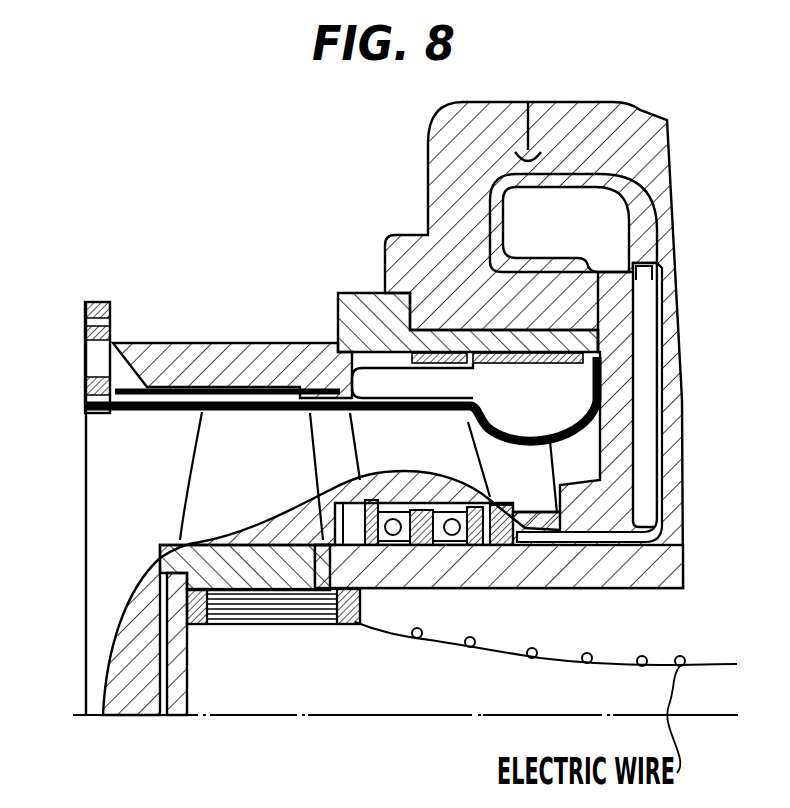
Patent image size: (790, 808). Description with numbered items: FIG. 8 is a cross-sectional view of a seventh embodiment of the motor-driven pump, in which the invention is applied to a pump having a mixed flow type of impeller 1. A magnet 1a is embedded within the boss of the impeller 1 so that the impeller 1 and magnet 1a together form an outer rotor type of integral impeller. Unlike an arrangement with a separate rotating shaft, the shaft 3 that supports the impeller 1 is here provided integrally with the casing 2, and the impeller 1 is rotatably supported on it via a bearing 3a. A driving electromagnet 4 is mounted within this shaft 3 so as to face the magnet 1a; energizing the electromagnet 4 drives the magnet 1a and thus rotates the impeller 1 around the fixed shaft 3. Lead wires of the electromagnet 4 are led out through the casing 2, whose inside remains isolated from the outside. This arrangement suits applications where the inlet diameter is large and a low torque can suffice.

The impeller 1 is at (207, 468).
The magnet 1a is at (162, 559).
The casing 2 is at (646, 103).
The rotary shaft 3 is at (117, 715).
The bearing 3a is at (493, 497).
The electromagnet 4 is at (300, 623).